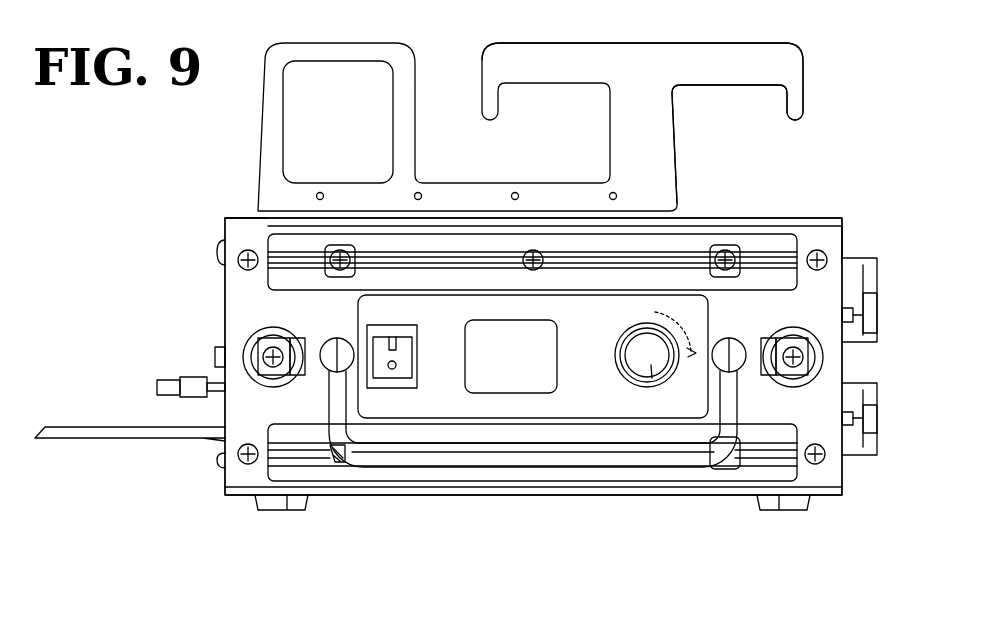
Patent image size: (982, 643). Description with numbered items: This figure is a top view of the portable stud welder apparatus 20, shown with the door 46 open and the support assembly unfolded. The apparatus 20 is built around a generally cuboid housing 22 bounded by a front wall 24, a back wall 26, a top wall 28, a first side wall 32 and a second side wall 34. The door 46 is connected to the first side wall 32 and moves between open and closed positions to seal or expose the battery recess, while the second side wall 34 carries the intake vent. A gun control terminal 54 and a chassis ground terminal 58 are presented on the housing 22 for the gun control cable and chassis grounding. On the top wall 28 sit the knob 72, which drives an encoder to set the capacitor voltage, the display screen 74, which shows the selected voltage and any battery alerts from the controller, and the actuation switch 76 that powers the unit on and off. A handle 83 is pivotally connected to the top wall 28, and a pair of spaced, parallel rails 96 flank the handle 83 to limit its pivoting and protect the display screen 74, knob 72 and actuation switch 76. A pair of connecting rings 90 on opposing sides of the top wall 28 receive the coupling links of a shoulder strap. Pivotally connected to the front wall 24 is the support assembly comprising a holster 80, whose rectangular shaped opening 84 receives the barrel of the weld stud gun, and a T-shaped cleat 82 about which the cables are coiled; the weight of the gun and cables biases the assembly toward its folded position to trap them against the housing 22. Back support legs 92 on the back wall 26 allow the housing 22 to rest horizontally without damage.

The portable stud welder apparatus 20 is at (890, 207).
The housing 22 is at (816, 212).
The front wall 24 is at (717, 218).
The back wall 26 is at (646, 497).
The top wall 28 is at (245, 292).
The first side wall 32 is at (228, 221).
The second side wall 34 is at (852, 243).
The door 46 is at (95, 425).
The gun control terminal 54 is at (878, 297).
The chassis ground terminal 58 is at (878, 437).
The knob 72 is at (648, 370).
The display screen 74 is at (507, 367).
The actuation switch 76 is at (380, 372).
The holster 80 is at (407, 88).
The cleat 82 is at (655, 60).
The handle 83 is at (700, 457).
The rectangular shaped opening 84 is at (327, 72).
The connecting rings 90 is at (252, 337).
The back support legs 92 is at (271, 510).
The rails 96 is at (280, 246).